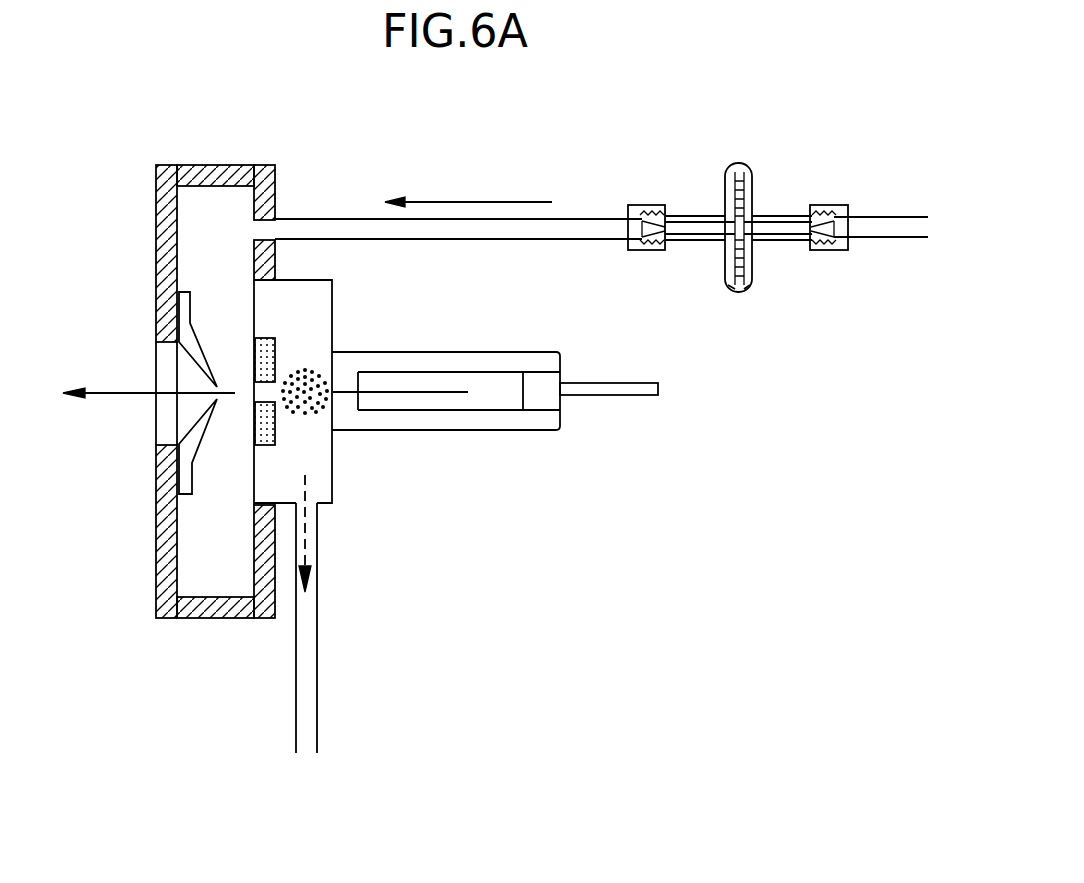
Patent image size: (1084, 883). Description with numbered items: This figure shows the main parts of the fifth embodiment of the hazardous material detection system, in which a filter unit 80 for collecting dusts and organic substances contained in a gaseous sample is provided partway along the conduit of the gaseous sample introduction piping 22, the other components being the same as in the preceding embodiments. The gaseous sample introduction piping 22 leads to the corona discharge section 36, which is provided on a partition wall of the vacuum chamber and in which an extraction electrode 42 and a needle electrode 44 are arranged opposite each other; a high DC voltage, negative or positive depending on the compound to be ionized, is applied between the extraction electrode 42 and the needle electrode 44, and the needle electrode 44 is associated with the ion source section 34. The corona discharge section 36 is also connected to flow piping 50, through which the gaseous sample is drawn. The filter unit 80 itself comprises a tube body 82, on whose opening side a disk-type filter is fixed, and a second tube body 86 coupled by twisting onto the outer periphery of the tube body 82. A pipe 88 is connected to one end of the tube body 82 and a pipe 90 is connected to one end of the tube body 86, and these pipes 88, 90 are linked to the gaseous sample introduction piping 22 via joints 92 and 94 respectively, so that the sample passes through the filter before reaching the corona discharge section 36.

The gaseous sample introduction piping 22 is at (585, 219).
The ion source section 34 is at (516, 341).
The corona discharge section 36 is at (345, 300).
The extraction electrode 42 is at (277, 423).
The needle electrode 44 is at (443, 392).
The flow piping 50 is at (317, 688).
The filter unit 80 is at (745, 143).
The tube body 82 is at (725, 277).
The tube body 86 is at (753, 277).
The pipe 88 is at (688, 216).
The pipe 90 is at (773, 216).
The joint 92 is at (645, 250).
The joint 94 is at (832, 250).